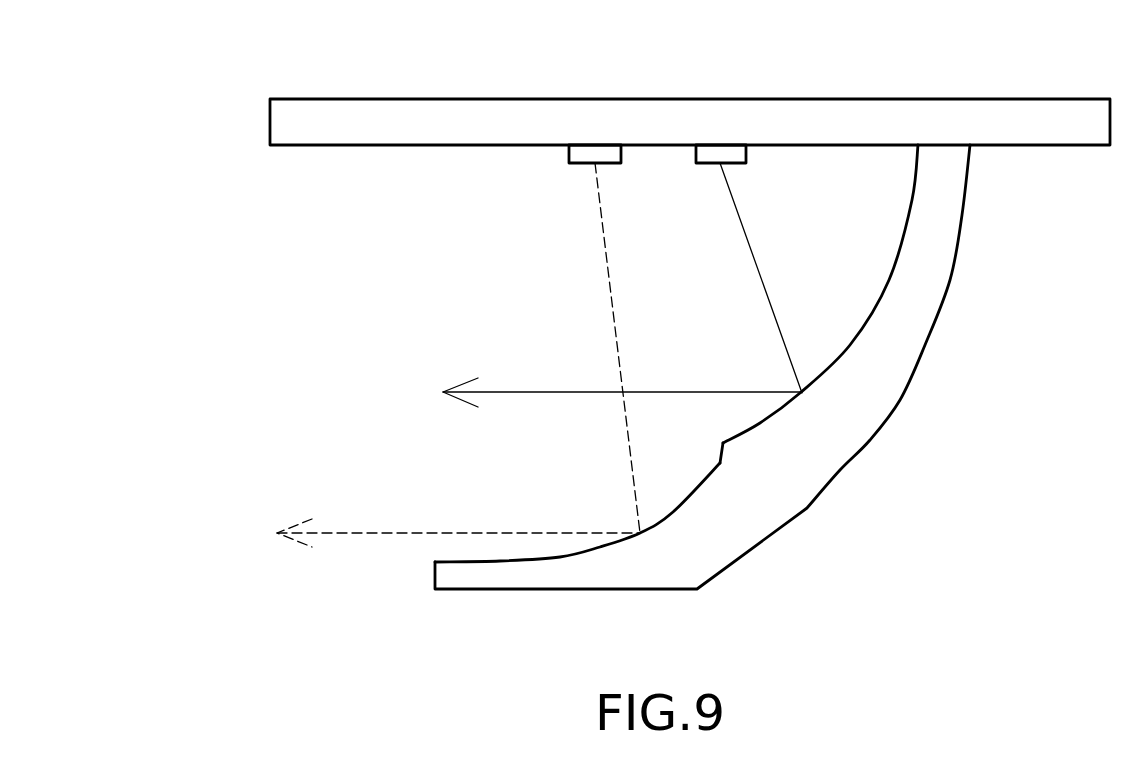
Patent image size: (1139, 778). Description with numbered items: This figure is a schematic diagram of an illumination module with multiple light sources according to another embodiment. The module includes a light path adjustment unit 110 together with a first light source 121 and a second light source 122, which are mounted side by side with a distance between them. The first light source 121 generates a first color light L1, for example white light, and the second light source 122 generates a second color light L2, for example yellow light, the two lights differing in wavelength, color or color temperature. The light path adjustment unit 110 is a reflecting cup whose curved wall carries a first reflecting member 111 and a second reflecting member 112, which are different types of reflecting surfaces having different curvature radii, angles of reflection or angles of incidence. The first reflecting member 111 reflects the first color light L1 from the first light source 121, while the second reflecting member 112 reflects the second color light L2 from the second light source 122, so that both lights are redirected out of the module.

The light path adjustment unit 110 is at (720, 373).
The first reflecting member 111 is at (882, 298).
The second reflecting member 112 is at (672, 512).
The first light source 121 is at (725, 148).
The second light source 122 is at (590, 148).
The first color light L1 is at (621, 369).
The second color light L2 is at (451, 554).